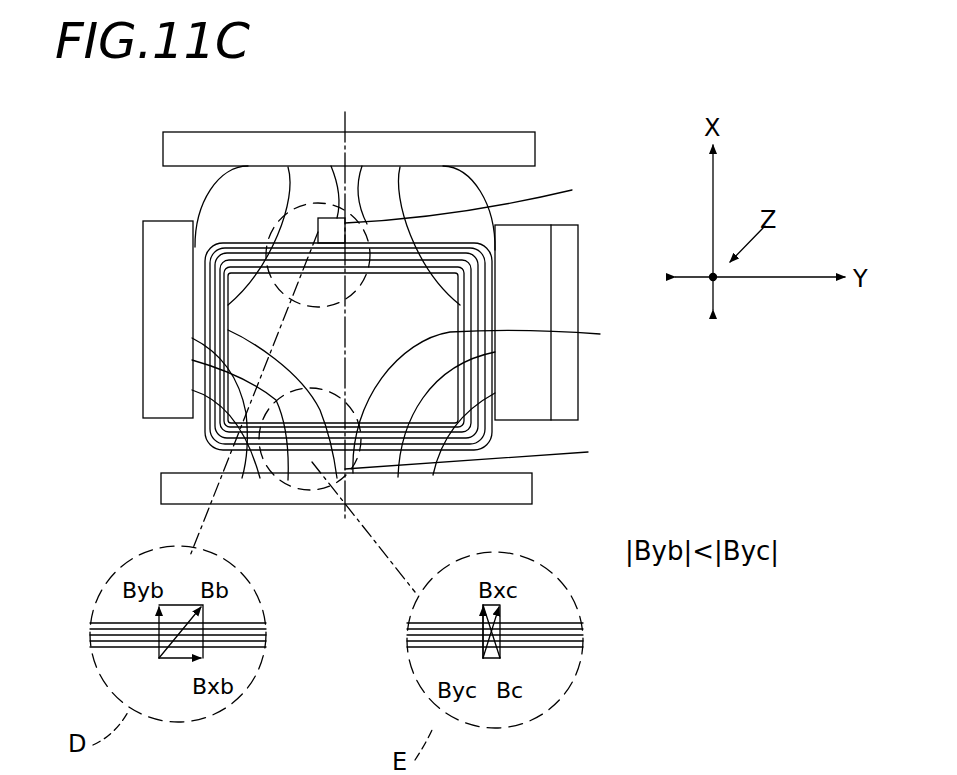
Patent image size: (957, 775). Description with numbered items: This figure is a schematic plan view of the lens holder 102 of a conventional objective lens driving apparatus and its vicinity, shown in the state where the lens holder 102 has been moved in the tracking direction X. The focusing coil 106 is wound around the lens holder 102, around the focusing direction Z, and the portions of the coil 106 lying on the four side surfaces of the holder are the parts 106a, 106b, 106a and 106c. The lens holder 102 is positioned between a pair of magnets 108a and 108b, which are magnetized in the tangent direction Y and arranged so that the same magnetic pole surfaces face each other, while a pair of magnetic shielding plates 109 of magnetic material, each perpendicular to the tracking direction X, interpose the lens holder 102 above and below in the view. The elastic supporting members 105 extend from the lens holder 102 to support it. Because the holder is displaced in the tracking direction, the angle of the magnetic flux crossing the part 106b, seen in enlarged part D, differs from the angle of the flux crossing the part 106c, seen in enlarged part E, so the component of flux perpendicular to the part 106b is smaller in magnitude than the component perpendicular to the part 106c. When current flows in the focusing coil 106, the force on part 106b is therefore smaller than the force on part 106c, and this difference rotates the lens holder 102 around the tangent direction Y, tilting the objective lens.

The lens holder 102 is at (262, 318).
The elastic supporting members 105 is at (572, 190).
The focusing coil 106 is at (300, 442).
The part of the focusing coil 106a is at (192, 338).
The part of the focusing coil 106b is at (398, 207).
The part of the focusing coil 106c is at (410, 480).
The magnet 108a is at (160, 262).
The magnet 108b is at (525, 272).
The magnetic shielding plates 109 is at (205, 134).